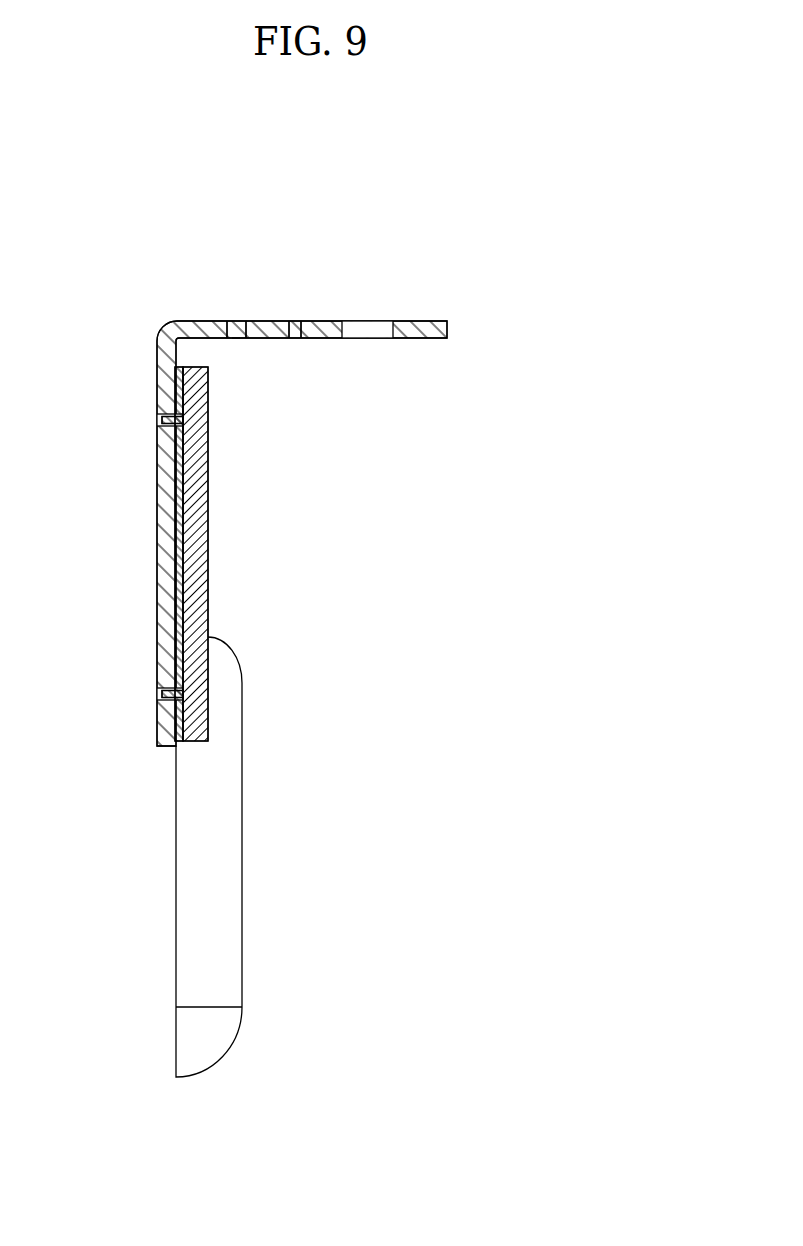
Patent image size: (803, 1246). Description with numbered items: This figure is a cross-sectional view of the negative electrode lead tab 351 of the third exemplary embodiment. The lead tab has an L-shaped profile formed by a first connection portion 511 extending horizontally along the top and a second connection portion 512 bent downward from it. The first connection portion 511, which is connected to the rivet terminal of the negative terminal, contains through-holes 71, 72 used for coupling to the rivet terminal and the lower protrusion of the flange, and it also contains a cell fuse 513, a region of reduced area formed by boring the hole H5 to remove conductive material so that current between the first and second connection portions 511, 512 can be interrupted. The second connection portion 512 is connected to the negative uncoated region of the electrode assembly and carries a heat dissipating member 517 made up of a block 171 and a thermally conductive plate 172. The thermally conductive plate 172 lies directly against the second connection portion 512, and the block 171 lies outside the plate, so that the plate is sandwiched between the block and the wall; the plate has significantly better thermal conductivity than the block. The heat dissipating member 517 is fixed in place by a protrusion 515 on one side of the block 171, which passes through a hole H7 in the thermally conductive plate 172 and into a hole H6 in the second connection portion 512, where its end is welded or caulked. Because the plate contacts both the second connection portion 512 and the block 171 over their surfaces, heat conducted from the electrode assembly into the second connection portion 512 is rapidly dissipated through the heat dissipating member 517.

The negative electrode lead tab 351 is at (308, 162).
The first connection portion 511 is at (347, 321).
The second connection portion 512 is at (148, 588).
The cell fuse 513 is at (237, 321).
The protrusion 515 is at (157, 445).
The heat dissipating member 517 is at (201, 554).
The block 171 is at (193, 493).
The thermally conductive plate 172 is at (180, 542).
The through-hole 71 is at (368, 321).
The through-hole 72 is at (294, 321).
The hole H5 is at (236, 336).
The hole H6 is at (158, 420).
The hole H7 is at (190, 428).